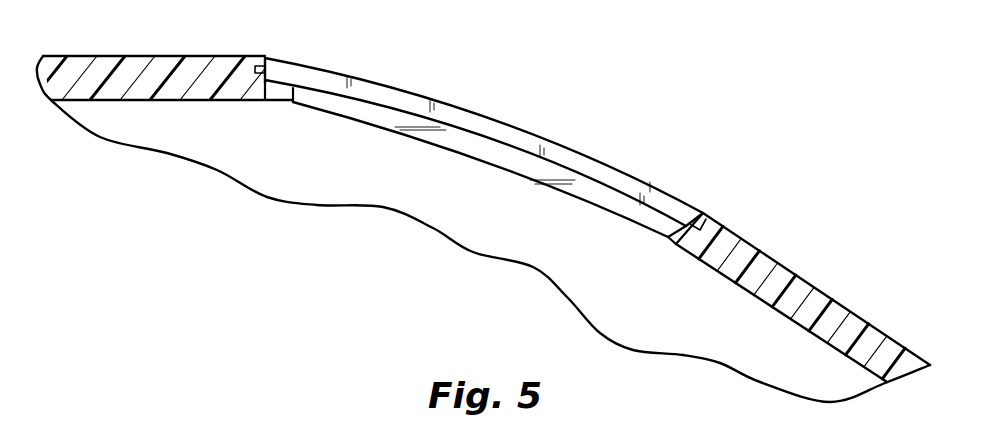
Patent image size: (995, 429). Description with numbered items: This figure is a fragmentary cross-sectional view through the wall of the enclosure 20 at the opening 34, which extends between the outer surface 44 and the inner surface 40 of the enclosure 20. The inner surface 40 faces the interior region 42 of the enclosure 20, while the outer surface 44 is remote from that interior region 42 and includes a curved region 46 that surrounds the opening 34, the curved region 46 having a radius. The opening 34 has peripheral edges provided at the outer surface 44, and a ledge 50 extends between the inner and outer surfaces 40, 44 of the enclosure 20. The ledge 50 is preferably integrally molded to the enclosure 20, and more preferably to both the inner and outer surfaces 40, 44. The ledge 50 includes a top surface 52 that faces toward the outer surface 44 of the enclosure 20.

The enclosure 20 is at (782, 167).
The opening 34 is at (495, 120).
The inner surface 40 is at (160, 100).
The interior region 42 is at (452, 207).
The outer surface 44 is at (145, 56).
The curved region 46 is at (263, 45).
The ledge 50 is at (277, 97).
The top surface 52 is at (687, 203).